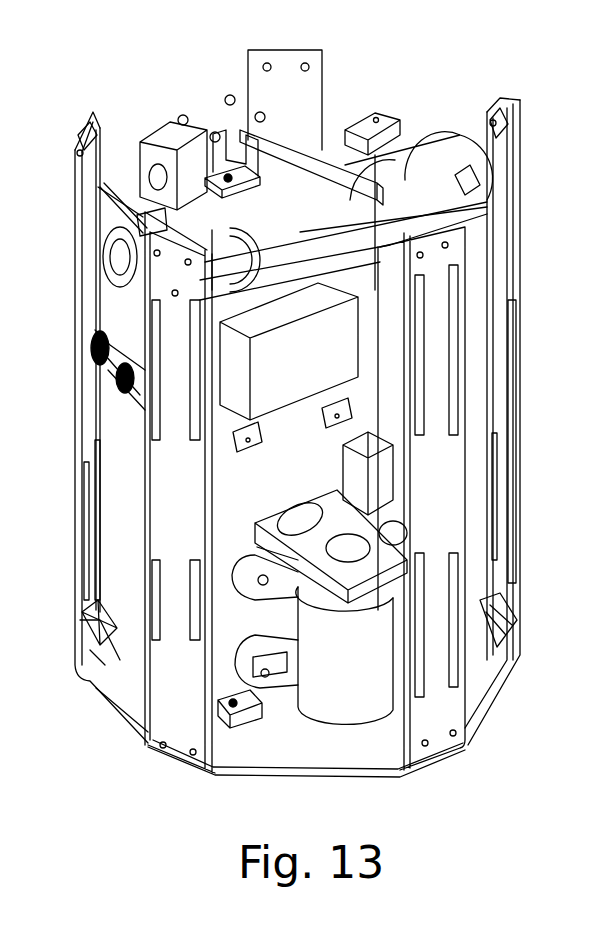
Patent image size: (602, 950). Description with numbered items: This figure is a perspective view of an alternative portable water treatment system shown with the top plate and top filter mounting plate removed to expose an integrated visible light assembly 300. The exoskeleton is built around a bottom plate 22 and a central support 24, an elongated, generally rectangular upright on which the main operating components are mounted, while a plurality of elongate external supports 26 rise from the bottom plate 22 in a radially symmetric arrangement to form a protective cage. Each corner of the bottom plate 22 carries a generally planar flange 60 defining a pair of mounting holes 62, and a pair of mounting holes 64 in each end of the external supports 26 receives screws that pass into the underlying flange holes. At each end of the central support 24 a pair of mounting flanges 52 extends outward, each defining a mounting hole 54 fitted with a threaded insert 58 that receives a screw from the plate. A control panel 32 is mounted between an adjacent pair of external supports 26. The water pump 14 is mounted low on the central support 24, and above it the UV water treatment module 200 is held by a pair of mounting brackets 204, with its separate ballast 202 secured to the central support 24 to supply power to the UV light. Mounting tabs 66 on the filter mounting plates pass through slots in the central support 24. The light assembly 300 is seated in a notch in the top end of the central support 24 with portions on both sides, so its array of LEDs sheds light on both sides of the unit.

The water pump 14 is at (300, 770).
The bottom plate 22 is at (298, 776).
The central support 24 is at (378, 370).
The external supports 26 is at (520, 262).
The control panel 32 is at (122, 312).
The mounting flanges 52 is at (200, 175).
The mounting hole 54 is at (376, 118).
The threaded insert 58 is at (230, 176).
The flange 60 is at (108, 640).
The mounting holes 62 is at (93, 640).
The mounting holes 64 is at (302, 62).
The mounting tabs 66 is at (246, 455).
The UV water treatment module 200 is at (480, 172).
The ballast 202 is at (290, 400).
The mounting brackets 204 is at (395, 180).
The light assembly 300 is at (335, 200).